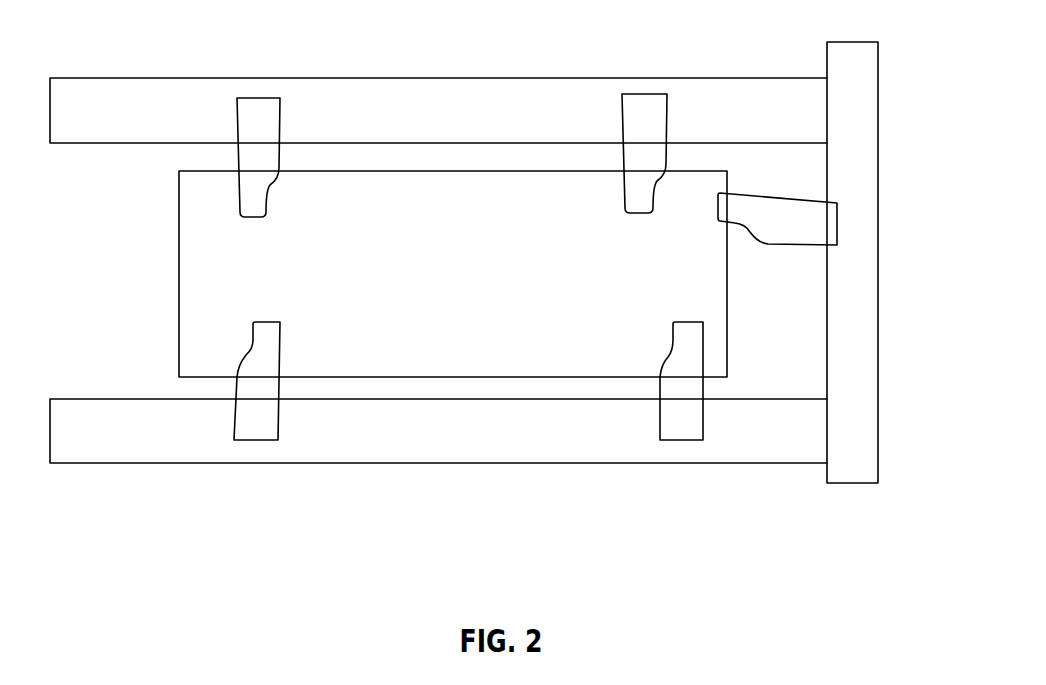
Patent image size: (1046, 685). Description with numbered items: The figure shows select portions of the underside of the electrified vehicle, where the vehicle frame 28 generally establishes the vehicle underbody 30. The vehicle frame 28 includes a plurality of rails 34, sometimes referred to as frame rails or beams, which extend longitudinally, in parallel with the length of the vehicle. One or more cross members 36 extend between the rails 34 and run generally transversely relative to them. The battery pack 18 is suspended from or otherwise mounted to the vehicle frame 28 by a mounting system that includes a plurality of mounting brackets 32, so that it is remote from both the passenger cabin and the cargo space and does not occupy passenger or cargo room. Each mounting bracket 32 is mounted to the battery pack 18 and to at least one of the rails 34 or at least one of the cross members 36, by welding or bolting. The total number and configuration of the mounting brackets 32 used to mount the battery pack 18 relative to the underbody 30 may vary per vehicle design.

The battery pack 18 is at (449, 277).
The vehicle frame 28 is at (819, 480).
The vehicle underbody 30 is at (751, 66).
The mounting brackets 32 is at (255, 120).
The rails 34 is at (482, 93).
The cross members 36 is at (868, 317).